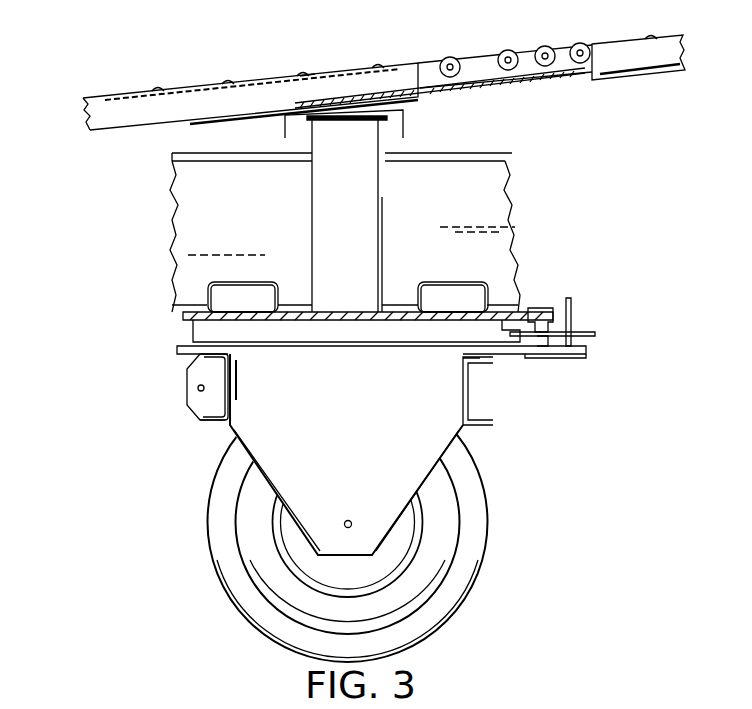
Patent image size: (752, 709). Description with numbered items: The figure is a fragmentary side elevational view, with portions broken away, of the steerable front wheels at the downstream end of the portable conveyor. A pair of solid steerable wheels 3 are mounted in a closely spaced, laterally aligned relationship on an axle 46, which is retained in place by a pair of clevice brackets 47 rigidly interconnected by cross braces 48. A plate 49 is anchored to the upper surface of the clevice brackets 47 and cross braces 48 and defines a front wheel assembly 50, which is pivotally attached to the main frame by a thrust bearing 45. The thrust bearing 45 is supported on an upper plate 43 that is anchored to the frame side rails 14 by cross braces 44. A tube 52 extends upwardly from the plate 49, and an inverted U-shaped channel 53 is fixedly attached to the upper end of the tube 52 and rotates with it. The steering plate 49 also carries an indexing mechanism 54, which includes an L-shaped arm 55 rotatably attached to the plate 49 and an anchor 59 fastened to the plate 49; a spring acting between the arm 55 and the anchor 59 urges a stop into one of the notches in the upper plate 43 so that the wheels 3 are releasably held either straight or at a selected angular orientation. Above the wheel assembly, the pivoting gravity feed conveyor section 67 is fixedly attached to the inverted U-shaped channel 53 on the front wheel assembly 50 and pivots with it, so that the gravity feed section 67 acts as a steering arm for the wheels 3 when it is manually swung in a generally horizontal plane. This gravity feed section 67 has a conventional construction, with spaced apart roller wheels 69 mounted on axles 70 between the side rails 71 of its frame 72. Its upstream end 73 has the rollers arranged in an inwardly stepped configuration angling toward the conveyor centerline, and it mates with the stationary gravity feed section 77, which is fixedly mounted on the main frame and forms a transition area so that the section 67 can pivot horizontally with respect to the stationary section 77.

The steerable wheels 3 is at (470, 550).
The frame side rails 14 is at (475, 175).
The plate 43 is at (402, 315).
The cross braces 44 is at (255, 282).
The thrust bearing 45 is at (200, 327).
The axle 46 is at (348, 520).
The clevice brackets 47 is at (440, 440).
The cross braces 48 is at (207, 421).
The plate 49 is at (515, 357).
The front wheel assembly 50 is at (176, 377).
The tube 52 is at (312, 190).
The inverted U-shaped channel 53 is at (285, 118).
The indexing mechanism 54 is at (583, 334).
The L-shaped arm 55 is at (574, 312).
The anchor 59 is at (567, 306).
The gravity feed conveyor section 67 is at (188, 90).
The roller wheels 69 is at (305, 73).
The axles 70 is at (450, 70).
The side rails 71 is at (117, 128).
The frame 72 is at (76, 88).
The upstream end 73 is at (504, 50).
The stationary gravity feed section 77 is at (632, 73).